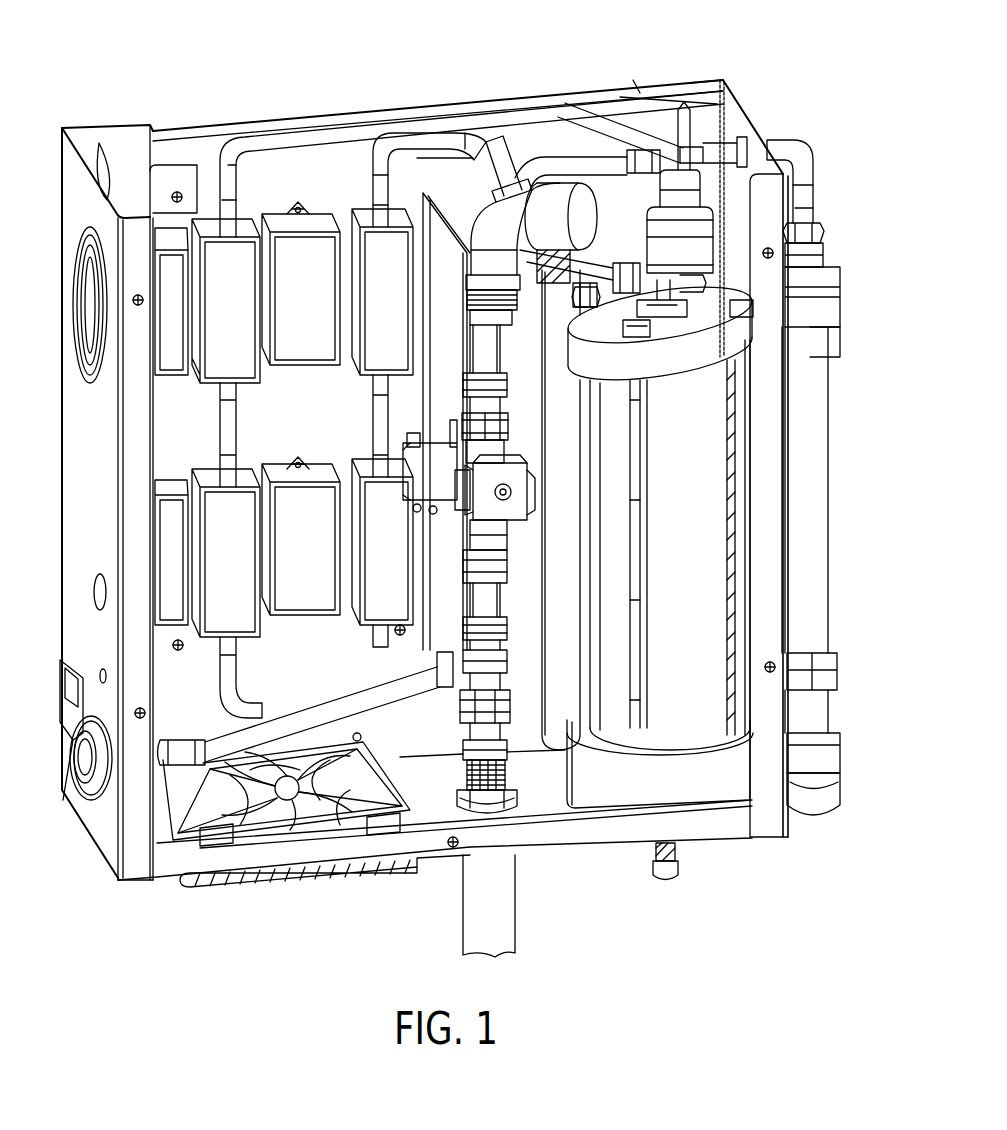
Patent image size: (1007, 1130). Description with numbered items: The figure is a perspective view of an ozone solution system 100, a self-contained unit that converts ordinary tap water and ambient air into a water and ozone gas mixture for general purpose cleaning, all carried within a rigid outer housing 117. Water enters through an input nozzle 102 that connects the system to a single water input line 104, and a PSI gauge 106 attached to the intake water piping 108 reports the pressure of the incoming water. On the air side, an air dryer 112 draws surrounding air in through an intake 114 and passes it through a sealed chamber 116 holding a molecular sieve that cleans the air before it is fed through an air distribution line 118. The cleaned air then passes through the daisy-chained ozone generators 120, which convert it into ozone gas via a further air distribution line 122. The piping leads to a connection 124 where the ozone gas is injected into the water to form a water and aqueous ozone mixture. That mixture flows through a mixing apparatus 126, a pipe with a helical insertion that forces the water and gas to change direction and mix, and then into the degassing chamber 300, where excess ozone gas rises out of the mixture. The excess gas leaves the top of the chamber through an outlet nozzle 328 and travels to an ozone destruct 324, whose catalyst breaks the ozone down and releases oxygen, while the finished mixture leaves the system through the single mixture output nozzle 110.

The ozone solution system 100 is at (116, 80).
The input nozzle 102 is at (497, 802).
The water input line 104 is at (477, 913).
The PSI gauge 106 is at (160, 745).
The intake water piping 108 is at (508, 635).
The mixture output nozzle 110 is at (660, 868).
The air dryer 112 is at (815, 490).
The intake 114 is at (813, 808).
The sealed chamber 116 is at (815, 573).
The rigid outer housing 117 is at (698, 95).
The air distribution line 118 is at (328, 133).
The ozone generators 120 is at (217, 257).
The air distribution line 122 is at (227, 418).
The connection 124 is at (537, 205).
The mixing apparatus 126 is at (565, 440).
The degassing chamber 300 is at (703, 640).
The ozone destruct 324 is at (653, 248).
The outlet nozzle 328 is at (748, 303).